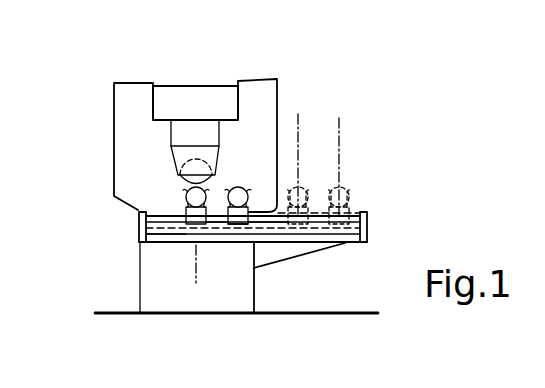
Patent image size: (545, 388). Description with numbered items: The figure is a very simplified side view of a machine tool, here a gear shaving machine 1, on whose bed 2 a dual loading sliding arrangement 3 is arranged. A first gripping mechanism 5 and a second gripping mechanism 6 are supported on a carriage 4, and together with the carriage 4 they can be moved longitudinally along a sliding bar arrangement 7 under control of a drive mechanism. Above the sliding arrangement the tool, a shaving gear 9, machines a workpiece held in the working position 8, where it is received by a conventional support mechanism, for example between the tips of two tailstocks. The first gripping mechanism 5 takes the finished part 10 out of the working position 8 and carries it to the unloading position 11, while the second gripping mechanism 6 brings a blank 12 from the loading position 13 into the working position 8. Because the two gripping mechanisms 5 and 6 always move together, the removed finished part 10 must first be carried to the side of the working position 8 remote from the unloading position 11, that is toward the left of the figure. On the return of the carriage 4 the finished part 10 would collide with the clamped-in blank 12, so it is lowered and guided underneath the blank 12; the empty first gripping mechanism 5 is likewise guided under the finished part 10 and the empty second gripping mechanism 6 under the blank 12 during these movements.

The gear shaving machine 1 is at (90, 98).
The bed 2 is at (152, 274).
The dual loading sliding arrangement 3 is at (150, 198).
The carriage 4 is at (211, 231).
The first gripping mechanism 5 is at (190, 234).
The second gripping mechanism 6 is at (239, 232).
The sliding bar arrangement 7 is at (272, 222).
The working position 8 is at (193, 270).
The shaving gear 9 is at (196, 283).
The finished part 10 is at (188, 193).
The unloading position 11 is at (304, 131).
The blank 12 is at (236, 190).
The loading position 13 is at (348, 137).